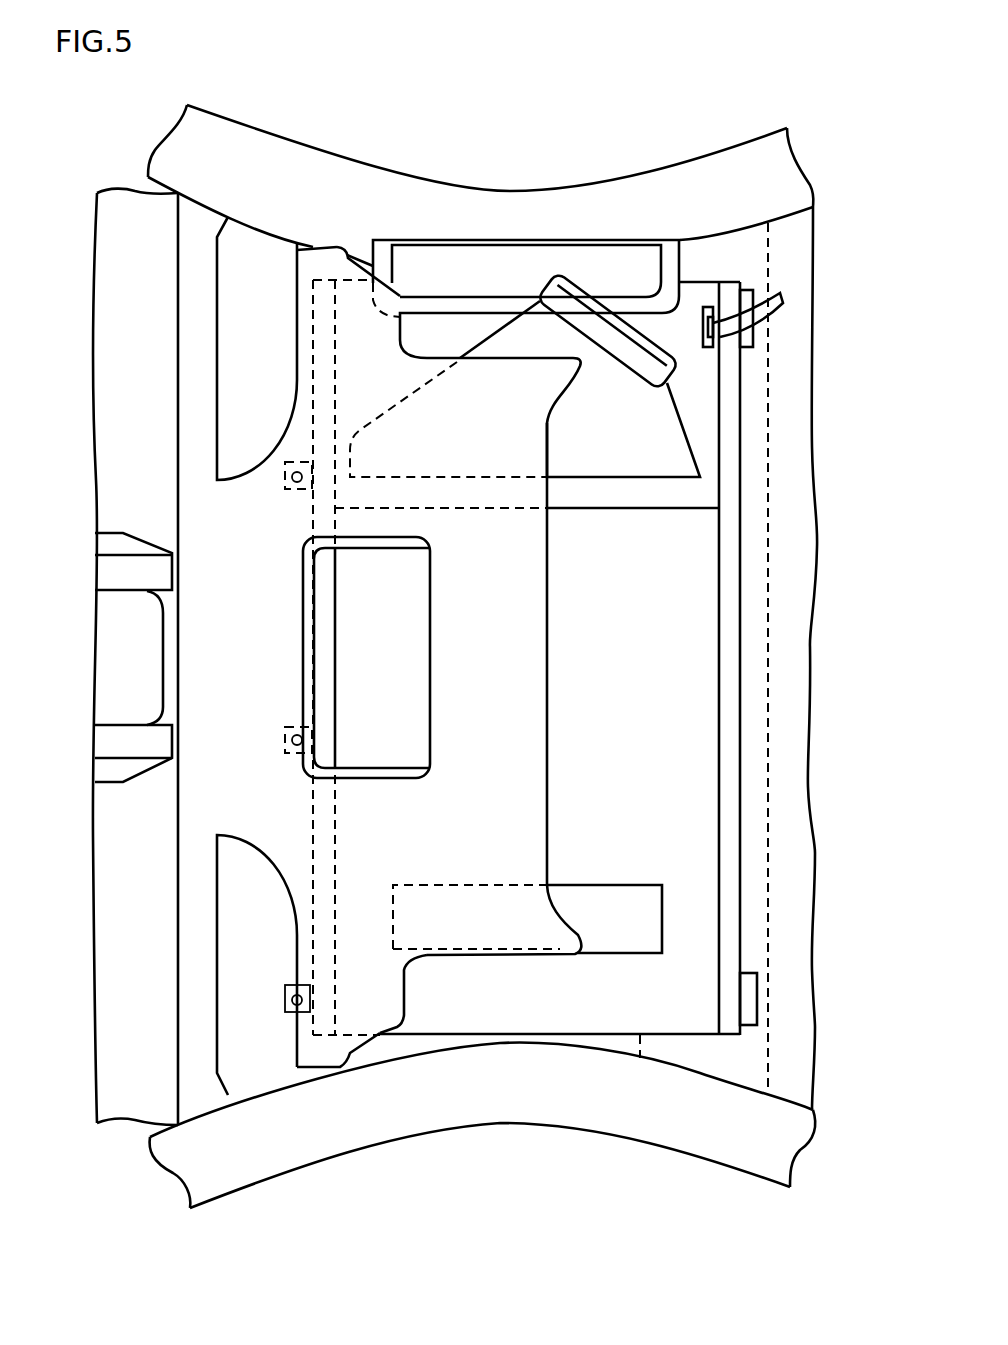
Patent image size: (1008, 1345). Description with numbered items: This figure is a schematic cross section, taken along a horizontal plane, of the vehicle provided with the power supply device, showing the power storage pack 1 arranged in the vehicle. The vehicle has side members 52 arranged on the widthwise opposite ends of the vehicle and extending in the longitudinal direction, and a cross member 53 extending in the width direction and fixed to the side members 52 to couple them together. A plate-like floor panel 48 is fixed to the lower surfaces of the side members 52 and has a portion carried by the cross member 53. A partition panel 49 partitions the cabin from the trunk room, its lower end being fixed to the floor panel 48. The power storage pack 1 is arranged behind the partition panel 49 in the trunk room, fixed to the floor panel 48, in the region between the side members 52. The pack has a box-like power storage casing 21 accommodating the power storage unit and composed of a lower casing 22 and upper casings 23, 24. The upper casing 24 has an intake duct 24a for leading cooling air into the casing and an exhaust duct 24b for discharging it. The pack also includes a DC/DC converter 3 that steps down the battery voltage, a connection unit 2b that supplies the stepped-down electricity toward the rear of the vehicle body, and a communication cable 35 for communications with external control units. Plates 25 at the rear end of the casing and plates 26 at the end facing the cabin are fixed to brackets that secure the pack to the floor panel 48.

The power storage pack 1 is at (690, 743).
The connection unit 2b is at (705, 322).
The DC/DC converter 3 is at (620, 920).
The power storage casing 21 is at (621, 573).
The lower casing 22 is at (728, 570).
The upper casing 23 is at (690, 528).
The upper casing 24 is at (600, 305).
The intake duct 24a is at (480, 343).
The exhaust duct 24b is at (525, 260).
The plates 25 is at (747, 335).
The plates 26 is at (285, 487).
The communication cable 35 is at (775, 309).
The floor panel 48 is at (133, 897).
The partition panel 49 is at (410, 998).
The side members 52 is at (313, 193).
The cross member 53 is at (773, 1057).